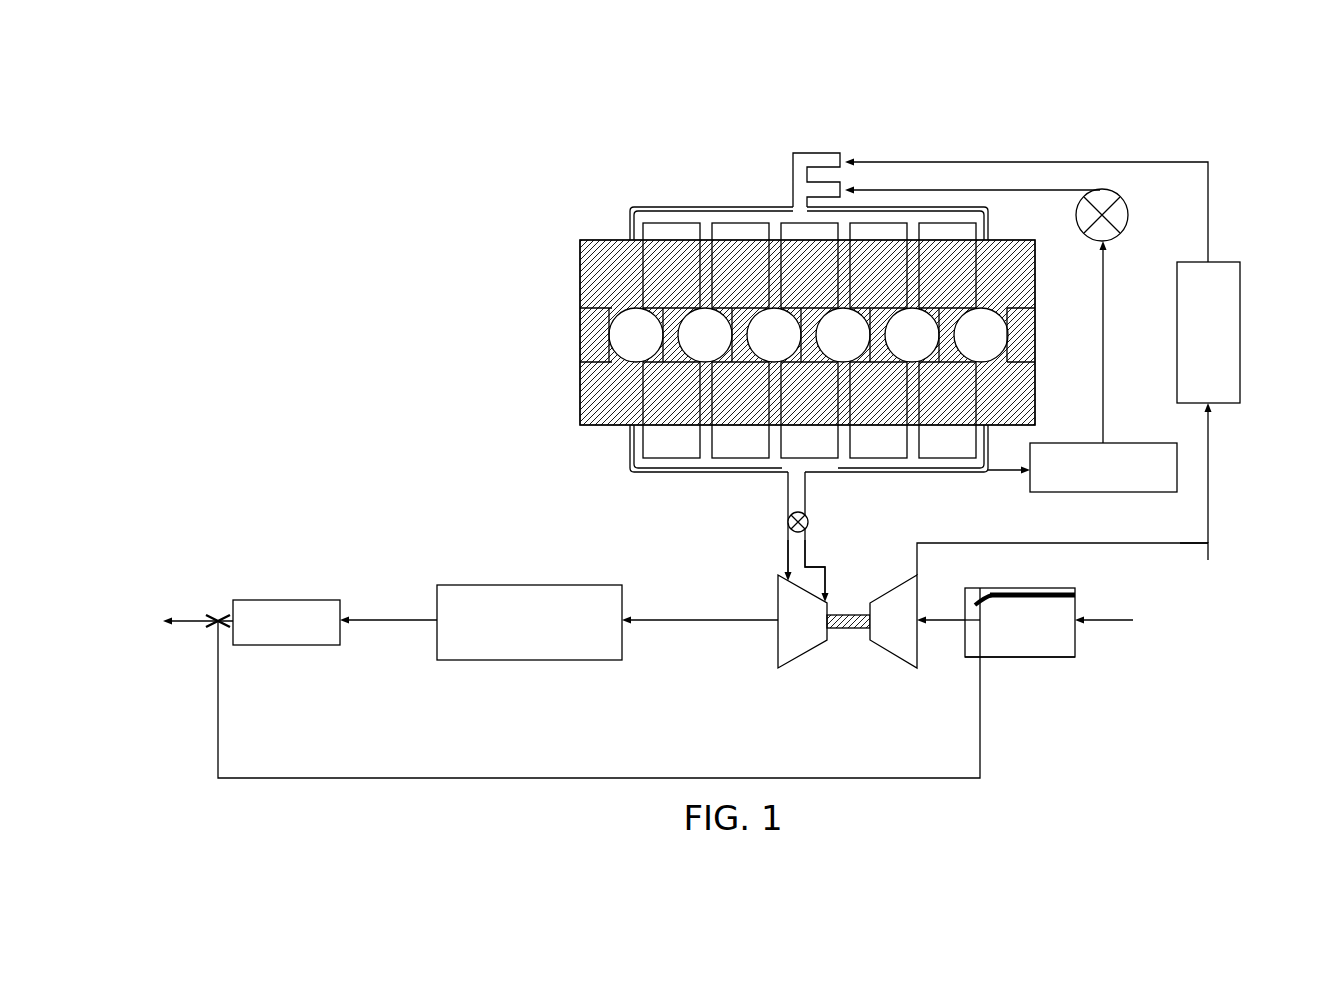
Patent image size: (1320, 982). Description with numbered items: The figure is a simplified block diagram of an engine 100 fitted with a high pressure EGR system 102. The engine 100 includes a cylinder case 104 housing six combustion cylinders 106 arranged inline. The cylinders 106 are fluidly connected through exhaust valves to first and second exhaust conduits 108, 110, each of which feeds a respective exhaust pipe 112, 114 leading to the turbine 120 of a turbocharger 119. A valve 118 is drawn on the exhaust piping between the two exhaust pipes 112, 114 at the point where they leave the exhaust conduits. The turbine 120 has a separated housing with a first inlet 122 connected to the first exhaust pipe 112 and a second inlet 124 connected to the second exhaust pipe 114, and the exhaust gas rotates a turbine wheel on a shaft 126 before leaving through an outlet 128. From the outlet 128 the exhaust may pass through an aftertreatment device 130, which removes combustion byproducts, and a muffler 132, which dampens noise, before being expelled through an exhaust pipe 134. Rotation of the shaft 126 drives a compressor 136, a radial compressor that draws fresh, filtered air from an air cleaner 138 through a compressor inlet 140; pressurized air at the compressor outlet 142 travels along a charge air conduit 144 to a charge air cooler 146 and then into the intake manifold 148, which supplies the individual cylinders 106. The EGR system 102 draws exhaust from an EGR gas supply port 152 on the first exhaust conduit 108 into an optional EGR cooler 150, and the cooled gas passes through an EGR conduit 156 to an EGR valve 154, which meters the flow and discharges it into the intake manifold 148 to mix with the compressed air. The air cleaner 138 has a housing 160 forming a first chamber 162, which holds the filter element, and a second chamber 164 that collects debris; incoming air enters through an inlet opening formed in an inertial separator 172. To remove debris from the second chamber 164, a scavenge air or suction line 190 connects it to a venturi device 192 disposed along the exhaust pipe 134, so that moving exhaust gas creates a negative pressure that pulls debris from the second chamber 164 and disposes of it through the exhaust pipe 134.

The engine 100 is at (1156, 126).
The high pressure EGR system 102 is at (1188, 552).
The cylinder case 104 is at (580, 258).
The combustion cylinders 106 is at (632, 348).
The first exhaust conduit 108 is at (888, 476).
The second exhaust conduit 110 is at (688, 474).
The first exhaust pipe 112 is at (810, 477).
The second exhaust pipe 114 is at (785, 480).
The exhaust valve 118 is at (810, 525).
The turbocharger 119 is at (793, 671).
The turbine 120 is at (806, 664).
The first inlet 122 is at (828, 603).
The second inlet 124 is at (805, 590).
The shaft 126 is at (842, 632).
The outlet 128 is at (778, 625).
The aftertreatment device 130 is at (530, 662).
The muffler 132 is at (285, 648).
The exhaust pipe 134 is at (212, 628).
The compressor 136 is at (888, 670).
The air cleaner 138 is at (1048, 660).
The compressor inlet 140 is at (920, 625).
The outlet 142 is at (895, 592).
The charge air conduit 144 is at (1212, 462).
The charge air cooler 146 is at (1228, 285).
The intake manifold 148 is at (818, 152).
The EGR cooler 150 is at (1050, 493).
The EGR gas supply port 152 is at (986, 472).
The EGR valve 154 is at (1120, 237).
The EGR conduit 156 is at (1106, 378).
The housing 160 is at (1077, 640).
The first chamber 162 is at (1010, 660).
The second chamber 164 is at (972, 652).
The inertial separator 172 is at (1035, 592).
The suction line 190 is at (982, 753).
The venturi device 192 is at (218, 612).